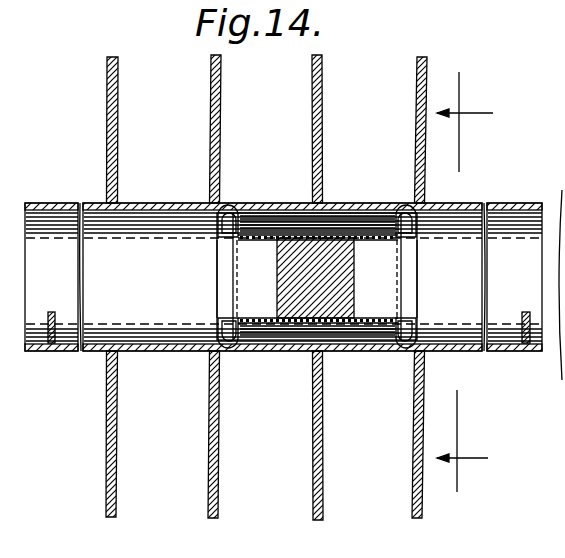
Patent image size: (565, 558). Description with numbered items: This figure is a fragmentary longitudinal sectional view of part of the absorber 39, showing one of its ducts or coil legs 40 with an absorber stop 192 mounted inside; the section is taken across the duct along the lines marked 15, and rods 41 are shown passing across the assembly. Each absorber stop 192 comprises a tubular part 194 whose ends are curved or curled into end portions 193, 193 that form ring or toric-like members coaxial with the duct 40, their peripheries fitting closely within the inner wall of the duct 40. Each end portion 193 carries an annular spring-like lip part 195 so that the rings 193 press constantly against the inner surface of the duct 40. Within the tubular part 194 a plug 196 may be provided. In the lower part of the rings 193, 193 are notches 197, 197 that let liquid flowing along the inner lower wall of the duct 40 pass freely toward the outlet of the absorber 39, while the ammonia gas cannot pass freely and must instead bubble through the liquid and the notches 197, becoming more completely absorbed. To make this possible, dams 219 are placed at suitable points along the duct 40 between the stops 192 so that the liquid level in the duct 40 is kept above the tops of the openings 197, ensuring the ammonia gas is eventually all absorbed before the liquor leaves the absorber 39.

The section line 15- 15 is at (466, 282).
The absorber 39 is at (479, 200).
The duct 40 is at (493, 352).
The rods 41 is at (195, 156).
The absorber stop 192 is at (215, 303).
The curled end portion 193 is at (217, 254).
The tubular part 194 is at (328, 237).
The spring like lip part 195 is at (233, 212).
The plug 196 is at (336, 310).
The notch 197 is at (224, 338).
The dam 219 is at (55, 330).